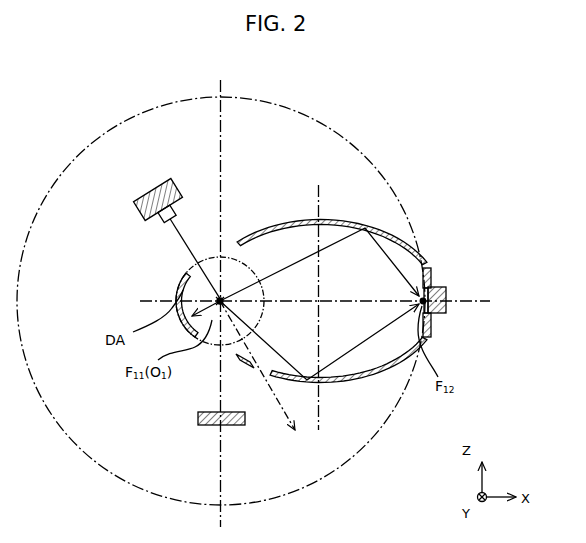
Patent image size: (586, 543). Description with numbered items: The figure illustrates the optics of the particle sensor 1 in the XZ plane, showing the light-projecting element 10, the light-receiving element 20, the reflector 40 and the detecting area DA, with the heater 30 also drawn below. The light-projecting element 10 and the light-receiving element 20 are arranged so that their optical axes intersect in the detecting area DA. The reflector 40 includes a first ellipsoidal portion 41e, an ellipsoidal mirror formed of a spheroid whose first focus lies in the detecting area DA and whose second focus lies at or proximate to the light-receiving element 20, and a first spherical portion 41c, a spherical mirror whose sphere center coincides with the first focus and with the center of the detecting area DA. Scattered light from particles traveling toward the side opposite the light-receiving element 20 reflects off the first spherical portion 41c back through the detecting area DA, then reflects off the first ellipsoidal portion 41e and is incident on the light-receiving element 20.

The particle sensor 1 is at (467, 122).
The light-projecting element 10 is at (147, 184).
The light-receiving element 20 is at (447, 290).
The heater 30 is at (205, 425).
The reflector 40 is at (301, 225).
The first spherical portion 41c is at (185, 256).
The first ellipsoidal portion 41e is at (283, 222).